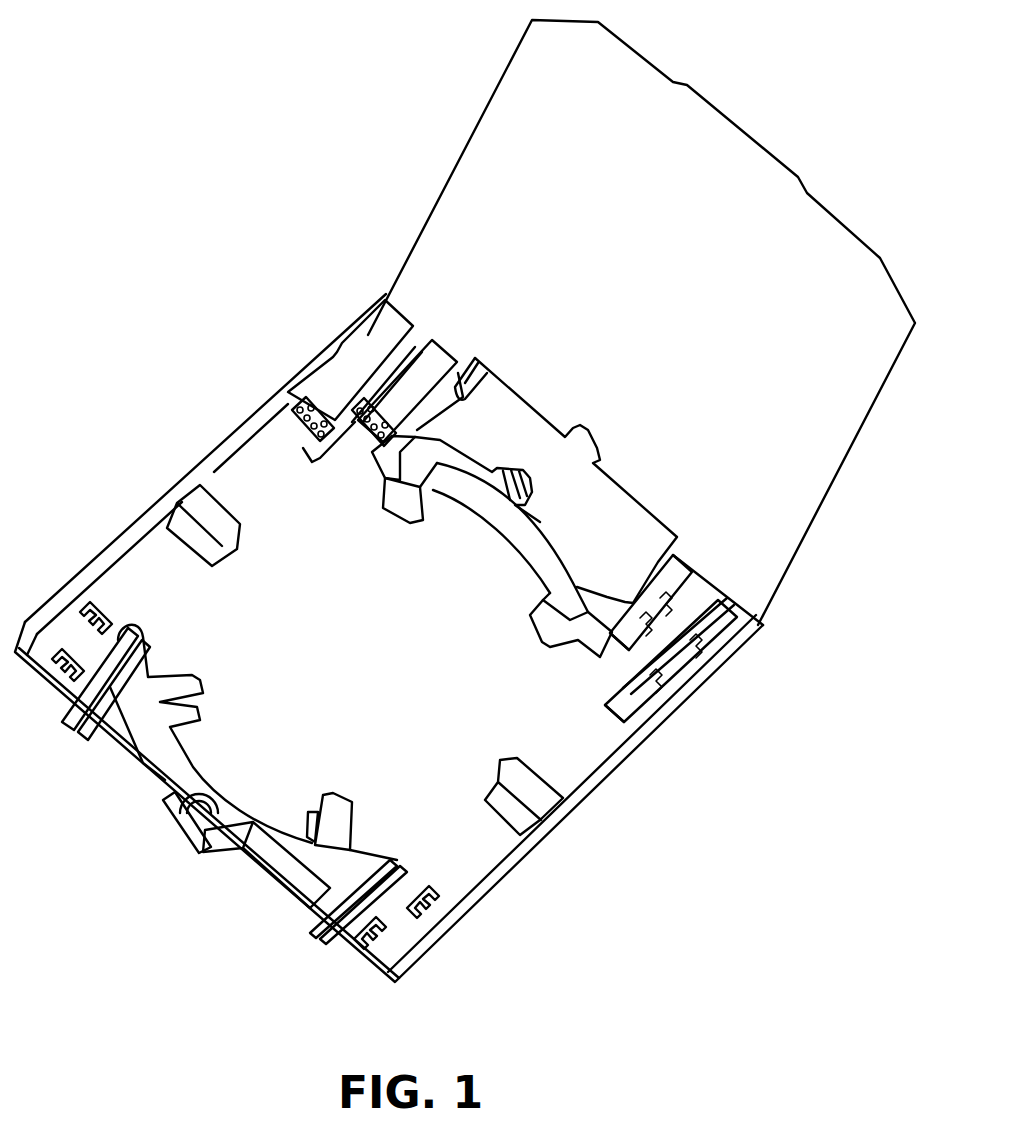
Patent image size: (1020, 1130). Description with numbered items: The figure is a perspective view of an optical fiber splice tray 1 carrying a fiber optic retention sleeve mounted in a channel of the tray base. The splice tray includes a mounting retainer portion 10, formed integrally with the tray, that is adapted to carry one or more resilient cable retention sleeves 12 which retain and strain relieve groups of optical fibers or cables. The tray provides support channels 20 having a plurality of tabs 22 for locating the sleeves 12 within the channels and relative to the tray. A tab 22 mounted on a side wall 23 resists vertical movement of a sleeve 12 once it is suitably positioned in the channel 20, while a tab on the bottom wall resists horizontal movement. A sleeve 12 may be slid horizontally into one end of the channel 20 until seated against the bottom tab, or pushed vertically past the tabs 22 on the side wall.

The optical fiber splice tray 1 is at (188, 288).
The mounting retainer portion 10 is at (409, 360).
The cable retention sleeve 12 is at (435, 365).
The support channel 20 is at (683, 598).
The tab 22 is at (340, 338).
The side wall 23 is at (217, 457).